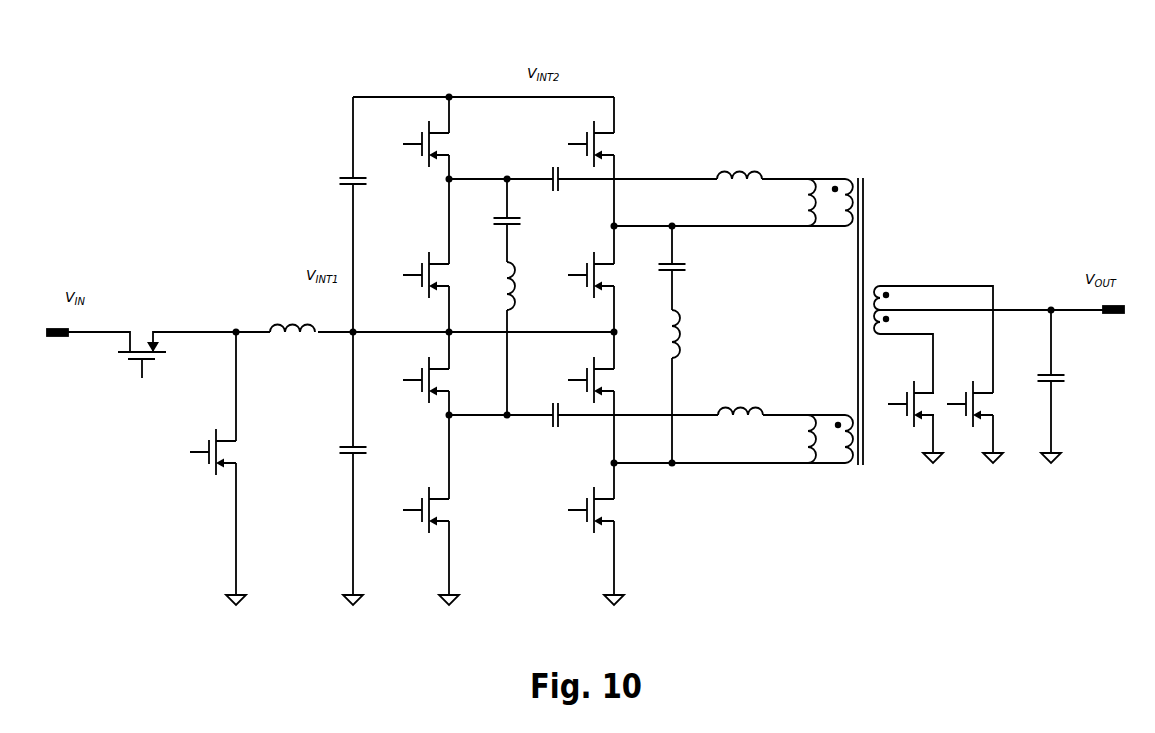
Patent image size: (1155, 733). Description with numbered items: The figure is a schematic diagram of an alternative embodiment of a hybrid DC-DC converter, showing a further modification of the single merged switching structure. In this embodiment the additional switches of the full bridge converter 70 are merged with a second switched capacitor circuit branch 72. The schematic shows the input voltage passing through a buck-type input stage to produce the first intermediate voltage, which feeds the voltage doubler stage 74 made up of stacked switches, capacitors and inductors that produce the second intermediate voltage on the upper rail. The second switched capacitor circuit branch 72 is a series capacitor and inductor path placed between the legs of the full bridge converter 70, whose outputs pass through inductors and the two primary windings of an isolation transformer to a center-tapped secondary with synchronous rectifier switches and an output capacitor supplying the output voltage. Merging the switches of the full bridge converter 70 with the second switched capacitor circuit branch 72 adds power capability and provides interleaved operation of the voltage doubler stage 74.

The full bridge converter 70 is at (787, 113).
The second switched capacitor circuit branch 72 is at (718, 302).
The voltage doubler stage 74 is at (435, 57).